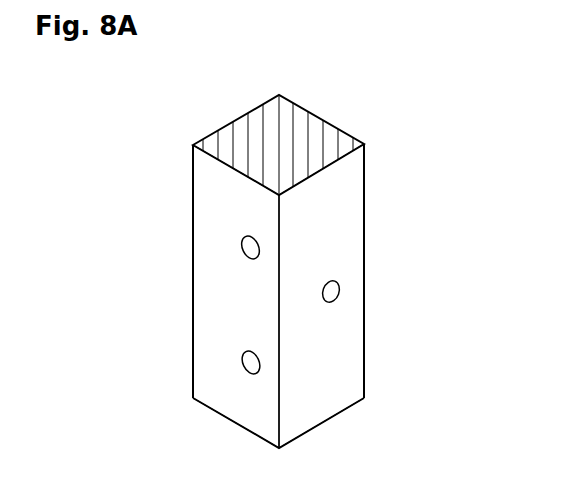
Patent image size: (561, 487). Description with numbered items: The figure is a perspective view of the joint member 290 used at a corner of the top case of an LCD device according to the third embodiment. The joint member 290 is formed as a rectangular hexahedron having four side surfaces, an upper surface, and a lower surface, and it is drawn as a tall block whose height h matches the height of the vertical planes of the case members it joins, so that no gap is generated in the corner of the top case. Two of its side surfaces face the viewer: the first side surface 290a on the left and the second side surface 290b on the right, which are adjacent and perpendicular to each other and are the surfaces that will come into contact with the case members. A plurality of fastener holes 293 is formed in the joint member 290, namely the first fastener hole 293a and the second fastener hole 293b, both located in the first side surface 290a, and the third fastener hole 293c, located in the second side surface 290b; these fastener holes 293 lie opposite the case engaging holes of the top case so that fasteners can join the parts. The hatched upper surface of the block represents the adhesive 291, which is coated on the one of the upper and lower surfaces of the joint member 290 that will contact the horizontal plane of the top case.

The joint member 290 is at (176, 82).
The adhesive 291 is at (242, 127).
The first side surface 290a is at (232, 400).
The second side surface 290b is at (348, 374).
The fastener holes 293 is at (364, 301).
The first fastener hole 293a is at (258, 243).
The second fastener hole 293b is at (258, 358).
The third fastener hole 293c is at (337, 289).
The height of pillar h is at (191, 143).